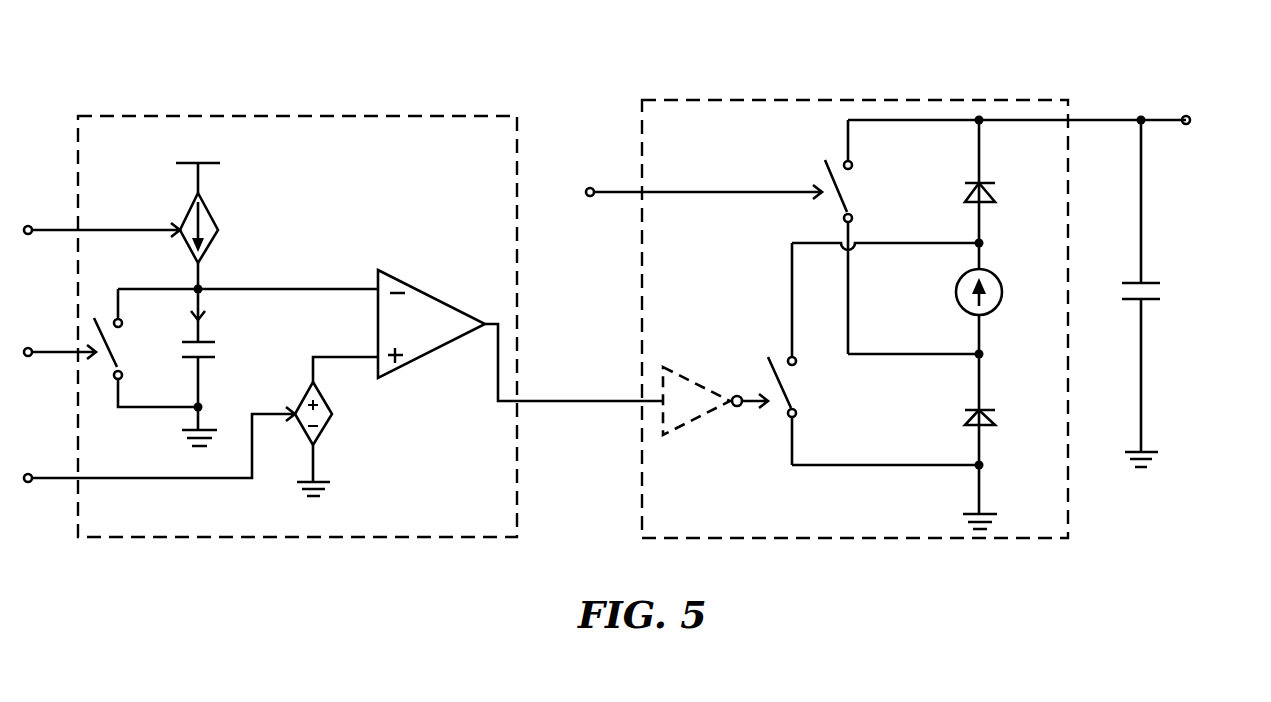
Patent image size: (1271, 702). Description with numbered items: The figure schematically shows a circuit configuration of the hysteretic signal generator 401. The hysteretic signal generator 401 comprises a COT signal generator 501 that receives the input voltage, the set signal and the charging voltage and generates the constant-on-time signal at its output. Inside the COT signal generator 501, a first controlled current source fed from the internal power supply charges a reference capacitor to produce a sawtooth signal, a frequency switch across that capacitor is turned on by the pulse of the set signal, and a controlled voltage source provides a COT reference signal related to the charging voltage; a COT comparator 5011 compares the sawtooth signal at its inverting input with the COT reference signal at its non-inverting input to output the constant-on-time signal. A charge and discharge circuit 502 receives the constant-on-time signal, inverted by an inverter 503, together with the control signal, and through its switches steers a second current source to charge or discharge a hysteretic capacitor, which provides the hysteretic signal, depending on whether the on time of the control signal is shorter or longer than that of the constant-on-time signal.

The hysteretic signal generator 401 is at (78, 65).
The COT signal generator 501 is at (310, 115).
The charge and discharge circuit 502 is at (907, 100).
The inverter 503 is at (698, 372).
The COT comparator 5011 is at (415, 287).